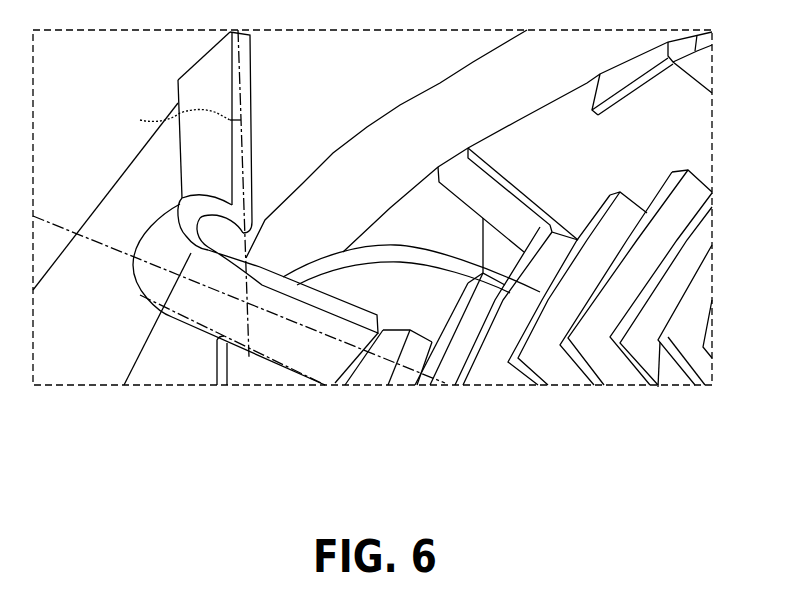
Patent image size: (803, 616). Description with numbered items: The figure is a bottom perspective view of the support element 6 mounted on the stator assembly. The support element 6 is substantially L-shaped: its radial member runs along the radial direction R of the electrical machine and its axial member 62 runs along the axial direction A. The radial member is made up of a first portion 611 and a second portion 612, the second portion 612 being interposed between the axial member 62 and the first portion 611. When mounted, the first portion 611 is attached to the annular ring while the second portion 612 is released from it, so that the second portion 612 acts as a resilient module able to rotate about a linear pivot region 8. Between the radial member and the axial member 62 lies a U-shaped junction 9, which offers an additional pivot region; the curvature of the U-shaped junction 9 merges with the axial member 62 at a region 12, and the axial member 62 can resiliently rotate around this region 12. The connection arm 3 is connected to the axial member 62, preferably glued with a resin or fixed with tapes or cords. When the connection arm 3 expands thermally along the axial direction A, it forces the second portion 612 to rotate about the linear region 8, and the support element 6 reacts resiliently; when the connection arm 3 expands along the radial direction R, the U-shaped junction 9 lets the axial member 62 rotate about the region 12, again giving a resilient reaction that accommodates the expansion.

The support element 6 is at (307, 93).
The connection arm 3 is at (385, 277).
The first portion 611 is at (178, 97).
The second portion 612 is at (253, 172).
The linear pivot region 8 is at (179, 121).
The U-shaped junction 9 is at (157, 247).
The region 12 is at (143, 298).
The axial member 62 is at (205, 316).
The axial direction A is at (239, 300).
The radial direction R is at (250, 193).